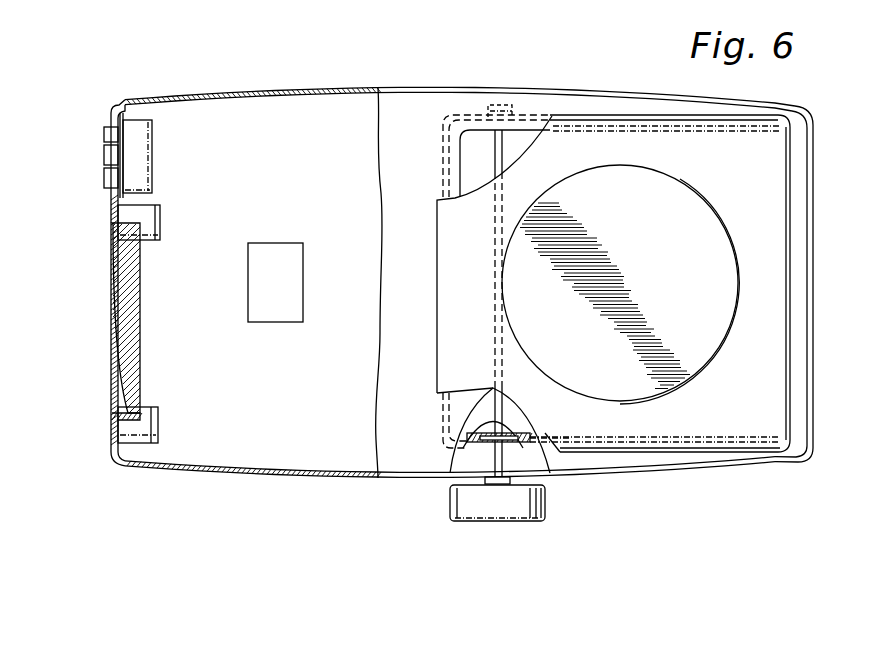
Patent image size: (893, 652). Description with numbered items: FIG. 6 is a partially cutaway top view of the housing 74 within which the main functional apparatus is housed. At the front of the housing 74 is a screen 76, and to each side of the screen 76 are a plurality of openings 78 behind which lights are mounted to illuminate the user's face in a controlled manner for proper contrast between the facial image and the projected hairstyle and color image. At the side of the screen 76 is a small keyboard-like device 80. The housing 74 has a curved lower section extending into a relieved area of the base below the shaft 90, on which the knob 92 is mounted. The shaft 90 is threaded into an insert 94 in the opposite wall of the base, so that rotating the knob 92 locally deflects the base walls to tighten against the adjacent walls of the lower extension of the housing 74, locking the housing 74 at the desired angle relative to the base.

The housing 74 is at (813, 443).
The screen 76 is at (112, 325).
The openings 78 is at (138, 212).
The keyboard-like device 80 is at (107, 152).
The shaft 90 is at (493, 405).
The knob 92 is at (503, 512).
The insert 94 is at (492, 106).